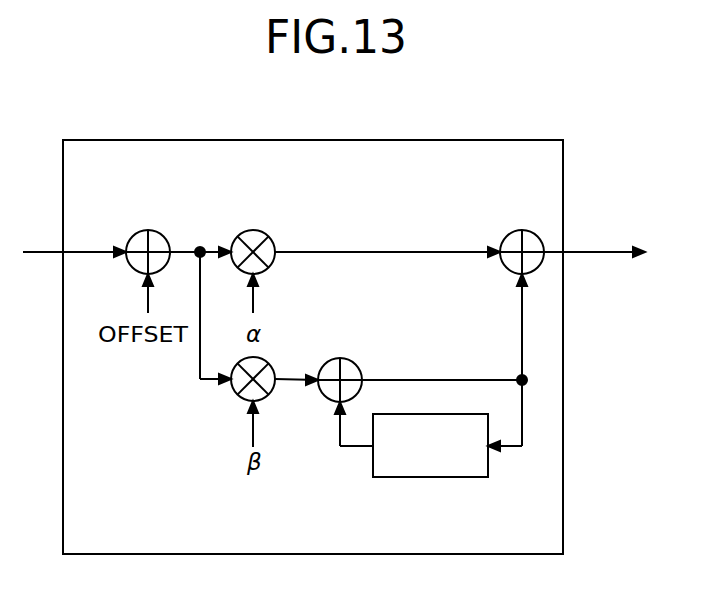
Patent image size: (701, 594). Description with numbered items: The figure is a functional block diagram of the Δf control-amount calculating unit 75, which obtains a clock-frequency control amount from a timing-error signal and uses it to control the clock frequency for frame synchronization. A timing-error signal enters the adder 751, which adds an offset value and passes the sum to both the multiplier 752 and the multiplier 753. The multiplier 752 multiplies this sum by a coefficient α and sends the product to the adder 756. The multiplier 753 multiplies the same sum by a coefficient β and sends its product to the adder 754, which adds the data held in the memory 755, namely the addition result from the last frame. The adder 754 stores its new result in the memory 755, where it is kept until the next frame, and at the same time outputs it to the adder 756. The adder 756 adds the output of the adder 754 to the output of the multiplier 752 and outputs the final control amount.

The Δf control-amount calculating unit 75 is at (485, 140).
The adder 751 is at (152, 228).
The multiplier 752 is at (258, 228).
The multiplier 753 is at (242, 403).
The adder 754 is at (345, 360).
The memory 755 is at (425, 477).
The adder 756 is at (512, 228).